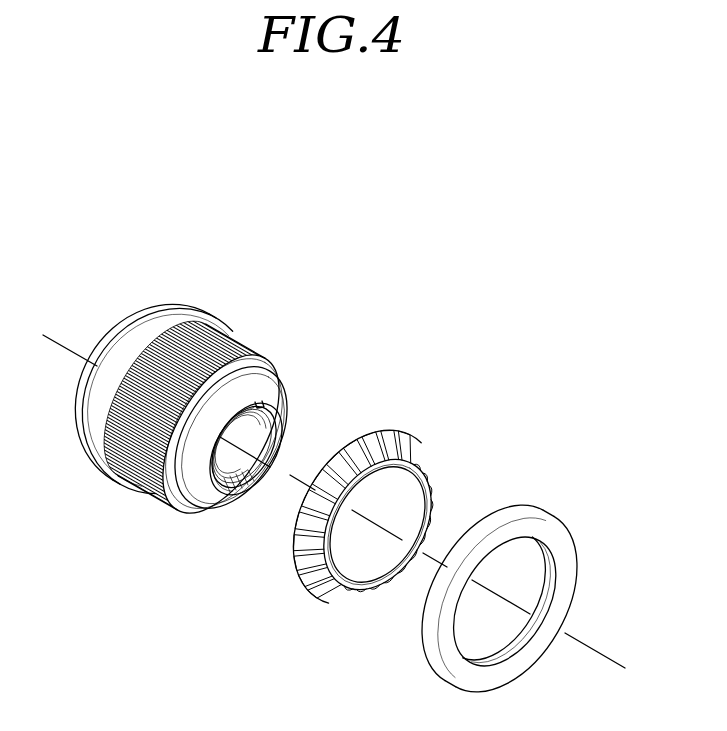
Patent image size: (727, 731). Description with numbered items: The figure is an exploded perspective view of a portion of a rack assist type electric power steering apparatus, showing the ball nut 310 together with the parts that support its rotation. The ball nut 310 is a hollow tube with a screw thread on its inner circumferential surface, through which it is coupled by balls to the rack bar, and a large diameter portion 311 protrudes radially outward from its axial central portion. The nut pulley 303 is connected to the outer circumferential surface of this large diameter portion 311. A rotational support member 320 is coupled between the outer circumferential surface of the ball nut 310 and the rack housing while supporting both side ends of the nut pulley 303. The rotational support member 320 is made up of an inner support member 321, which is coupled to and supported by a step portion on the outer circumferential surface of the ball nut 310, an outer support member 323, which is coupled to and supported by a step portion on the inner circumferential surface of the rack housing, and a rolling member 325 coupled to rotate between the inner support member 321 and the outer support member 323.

The rotational support member 320 is at (166, 313).
The nut pulley 303 is at (200, 337).
The ball nut 310 is at (235, 393).
The large diameter portion 311 is at (260, 382).
The inner support member 321 is at (368, 437).
The rolling member 325 is at (408, 442).
The outer support member 323 is at (502, 512).